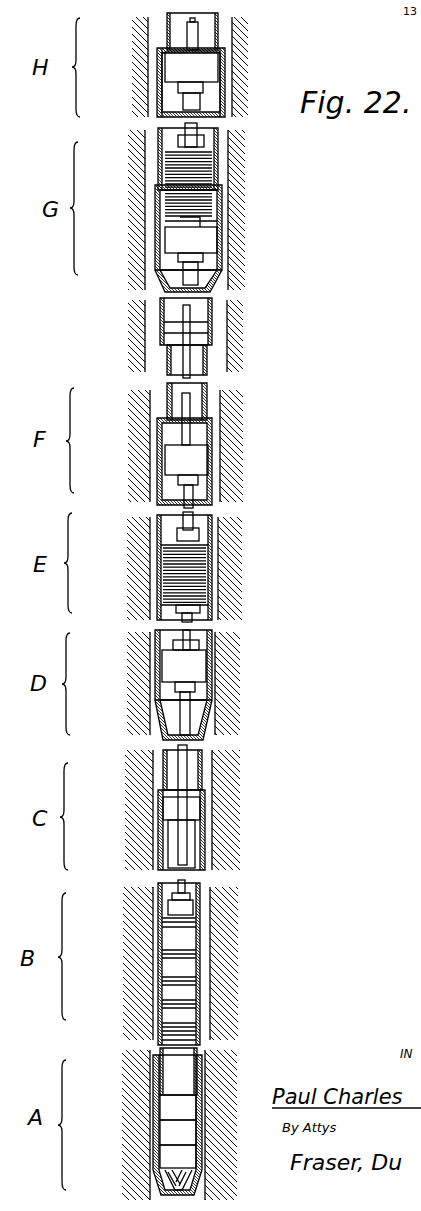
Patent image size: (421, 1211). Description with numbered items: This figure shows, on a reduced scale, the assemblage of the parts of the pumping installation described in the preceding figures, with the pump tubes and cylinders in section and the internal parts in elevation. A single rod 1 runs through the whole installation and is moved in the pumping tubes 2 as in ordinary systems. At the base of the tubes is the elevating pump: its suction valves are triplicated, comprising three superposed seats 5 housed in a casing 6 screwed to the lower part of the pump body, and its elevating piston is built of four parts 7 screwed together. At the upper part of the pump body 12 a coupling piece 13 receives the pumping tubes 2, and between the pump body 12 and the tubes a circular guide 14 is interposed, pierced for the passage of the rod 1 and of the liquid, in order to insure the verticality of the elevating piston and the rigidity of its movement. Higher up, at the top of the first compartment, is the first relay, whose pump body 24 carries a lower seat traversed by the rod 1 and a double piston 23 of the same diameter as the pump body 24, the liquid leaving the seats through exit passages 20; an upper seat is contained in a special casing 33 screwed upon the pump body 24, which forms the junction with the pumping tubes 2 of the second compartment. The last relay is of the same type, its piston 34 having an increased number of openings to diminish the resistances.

The rod 1 is at (188, 33).
The pumping tubes 2 is at (205, 282).
The seats 5 is at (185, 1107).
The casing 6 is at (197, 1085).
The parts of the elevating piston 7 is at (180, 940).
The pump body 12 is at (196, 990).
The coupling piece 13 is at (200, 813).
The circular guide 14 is at (170, 807).
The exit passages 20 is at (207, 73).
The double piston 23 is at (195, 570).
The pump body 24 is at (160, 583).
The casing 33 is at (210, 452).
The piston 34 is at (200, 180).